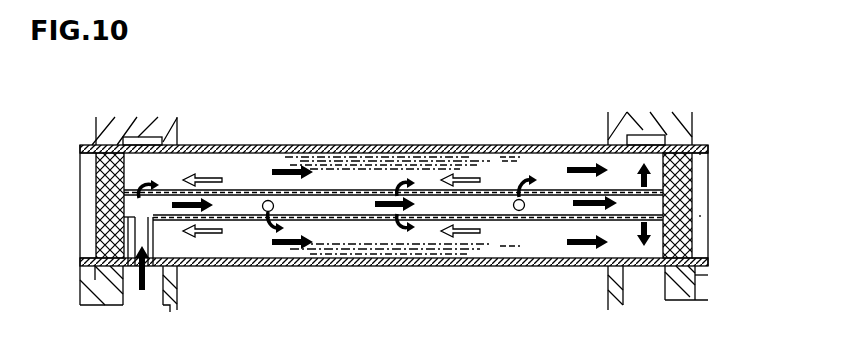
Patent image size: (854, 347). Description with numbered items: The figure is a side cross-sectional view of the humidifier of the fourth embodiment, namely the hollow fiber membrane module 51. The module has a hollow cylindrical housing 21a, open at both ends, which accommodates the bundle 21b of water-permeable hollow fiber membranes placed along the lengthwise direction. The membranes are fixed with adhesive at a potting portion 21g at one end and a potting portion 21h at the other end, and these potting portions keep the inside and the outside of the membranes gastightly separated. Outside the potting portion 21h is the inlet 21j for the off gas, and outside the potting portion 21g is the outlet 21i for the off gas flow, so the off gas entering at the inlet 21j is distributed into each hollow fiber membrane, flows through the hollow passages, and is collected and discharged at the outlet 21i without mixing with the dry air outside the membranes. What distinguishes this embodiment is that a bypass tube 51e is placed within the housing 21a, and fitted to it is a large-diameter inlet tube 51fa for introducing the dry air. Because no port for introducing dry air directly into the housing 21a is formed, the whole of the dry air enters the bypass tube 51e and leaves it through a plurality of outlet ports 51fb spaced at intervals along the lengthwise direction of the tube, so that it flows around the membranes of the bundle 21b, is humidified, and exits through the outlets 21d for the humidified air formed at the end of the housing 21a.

The hollow fiber membrane module 51 is at (493, 110).
The housing 21a is at (392, 145).
The bundle of hollow fiber membranes 21b is at (400, 243).
The outlets for humidified air 21d is at (688, 145).
The potting portion 21g is at (93, 142).
The potting portion 21h is at (693, 176).
The outlet for off gas flow 21i is at (88, 223).
The inlet for off gas 21j is at (697, 218).
The bypass tube 51e is at (322, 190).
The inlet tube 51fa is at (160, 245).
The outlet ports 51fb is at (266, 204).